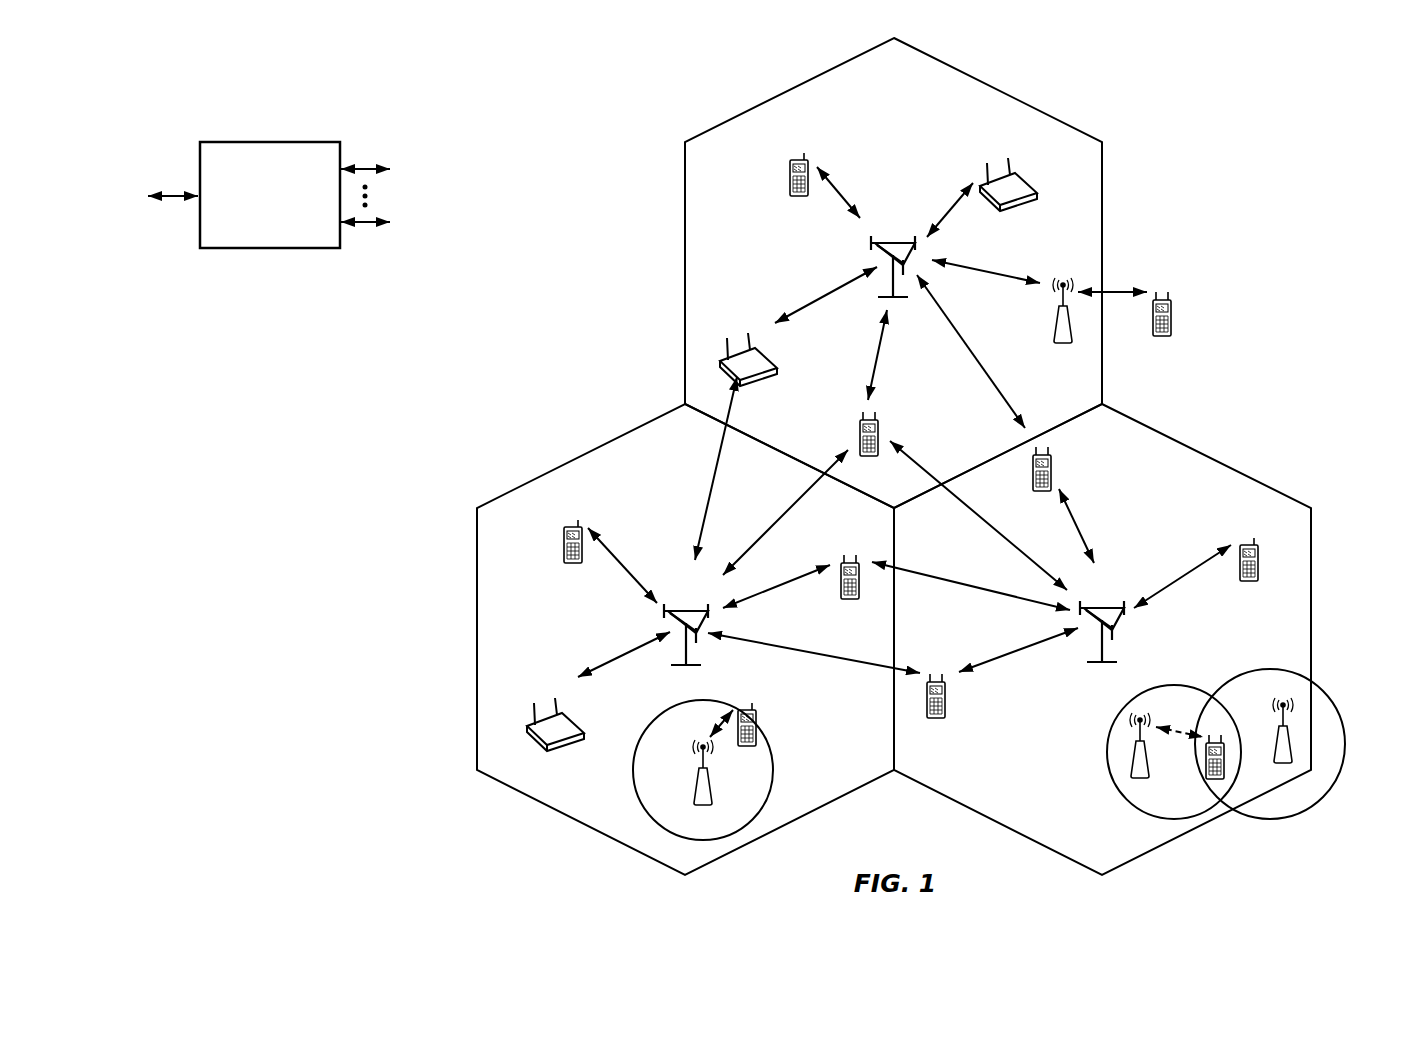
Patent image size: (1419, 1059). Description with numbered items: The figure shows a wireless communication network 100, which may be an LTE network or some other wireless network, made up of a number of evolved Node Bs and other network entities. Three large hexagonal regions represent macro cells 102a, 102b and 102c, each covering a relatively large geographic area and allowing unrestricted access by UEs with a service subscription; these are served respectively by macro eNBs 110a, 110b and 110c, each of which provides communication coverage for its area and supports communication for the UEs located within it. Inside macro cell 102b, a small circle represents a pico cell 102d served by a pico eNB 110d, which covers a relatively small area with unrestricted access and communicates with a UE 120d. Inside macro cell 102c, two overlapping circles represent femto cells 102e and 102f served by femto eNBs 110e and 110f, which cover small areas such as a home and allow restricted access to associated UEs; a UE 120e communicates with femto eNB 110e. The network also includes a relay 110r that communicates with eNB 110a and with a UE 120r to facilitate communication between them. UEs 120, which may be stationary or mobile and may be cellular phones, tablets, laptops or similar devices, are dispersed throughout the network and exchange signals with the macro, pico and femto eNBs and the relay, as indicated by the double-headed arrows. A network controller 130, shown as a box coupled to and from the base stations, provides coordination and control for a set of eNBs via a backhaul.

The wireless communication network 100 is at (1246, 105).
The macro cell 102a is at (1002, 91).
The macro cell 102b is at (570, 456).
The macro cell 102c is at (1212, 458).
The pico cell 102d is at (650, 716).
The femto cell 102e is at (1108, 714).
The femto cell 102f is at (1262, 668).
The macro eNB 110a is at (887, 243).
The macro eNB 110b is at (684, 608).
The macro eNB 110c is at (1104, 606).
The pico eNB 110d is at (713, 793).
The femto eNB 110e is at (1149, 766).
The femto eNB 110f is at (1290, 752).
The relay 110r is at (1053, 326).
The UE 120 is at (789, 167).
The UE 120d is at (758, 716).
The UE 120e is at (1203, 770).
The UE 120r is at (1172, 328).
The network controller 130 is at (268, 142).